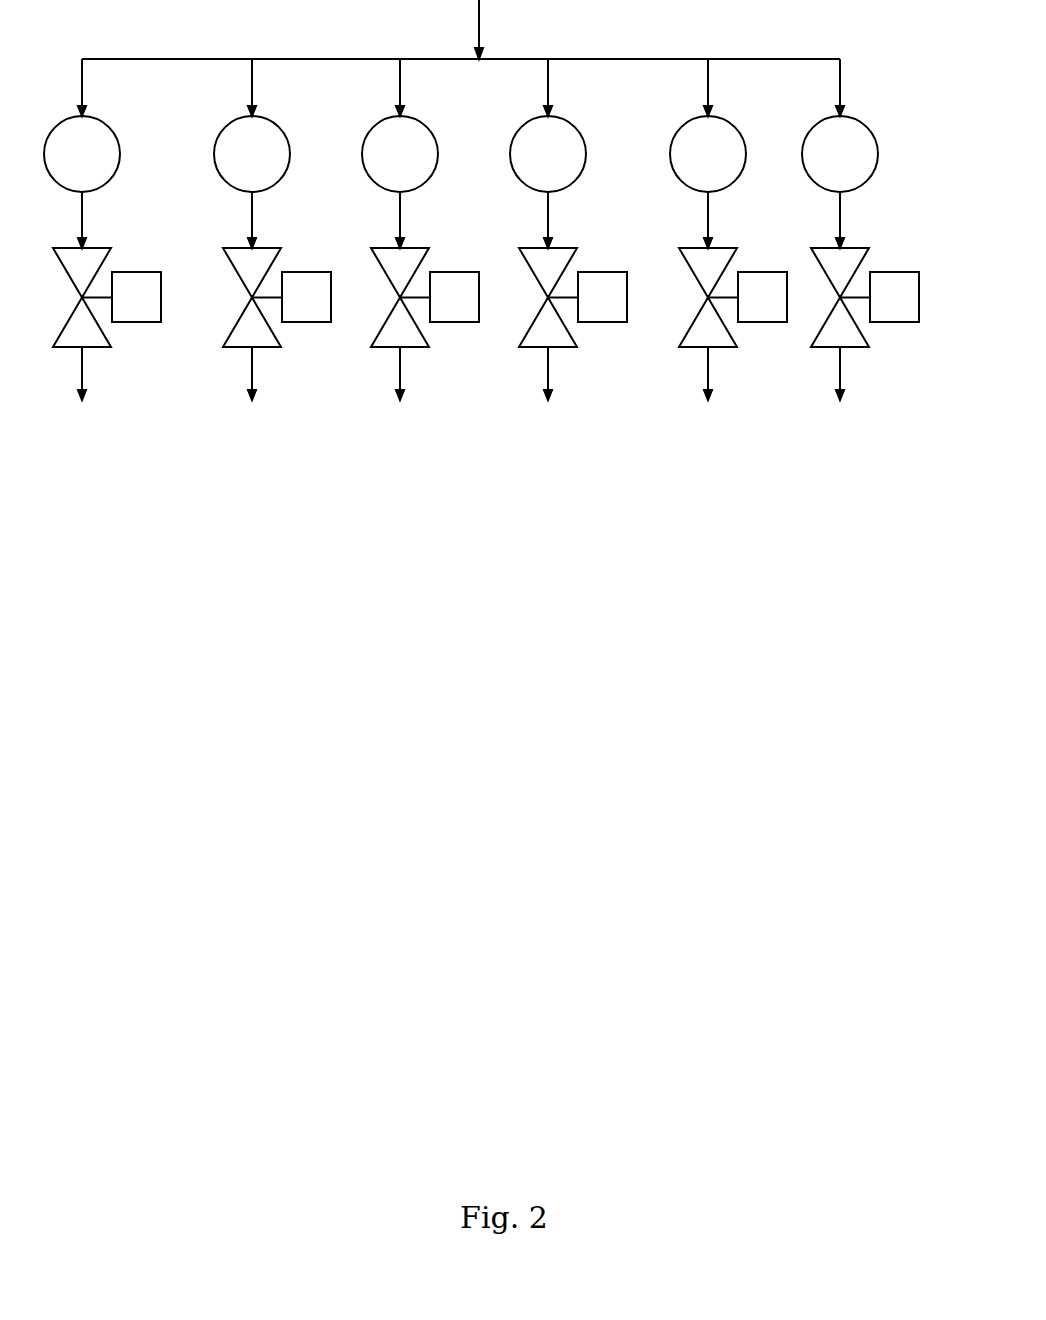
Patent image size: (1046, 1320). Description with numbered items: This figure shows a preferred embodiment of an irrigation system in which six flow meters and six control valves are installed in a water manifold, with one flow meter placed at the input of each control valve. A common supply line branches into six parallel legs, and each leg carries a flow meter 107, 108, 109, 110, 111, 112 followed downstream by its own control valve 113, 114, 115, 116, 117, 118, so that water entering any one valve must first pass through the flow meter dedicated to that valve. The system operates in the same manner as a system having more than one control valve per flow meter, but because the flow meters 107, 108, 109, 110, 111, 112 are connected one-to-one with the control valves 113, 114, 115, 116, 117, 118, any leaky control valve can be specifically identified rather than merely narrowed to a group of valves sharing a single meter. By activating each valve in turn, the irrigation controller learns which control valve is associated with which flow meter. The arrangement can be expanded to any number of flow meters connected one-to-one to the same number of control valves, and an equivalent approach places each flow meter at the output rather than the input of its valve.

The flow meter 107 is at (106, 177).
The flow meter 108 is at (276, 177).
The flow meter 109 is at (424, 177).
The flow meter 110 is at (572, 177).
The flow meter 111 is at (732, 177).
The flow meter 112 is at (864, 177).
The control valve 113 is at (134, 318).
The control valve 114 is at (304, 318).
The control valve 115 is at (452, 318).
The control valve 116 is at (600, 318).
The control valve 117 is at (760, 318).
The control valve 118 is at (892, 318).